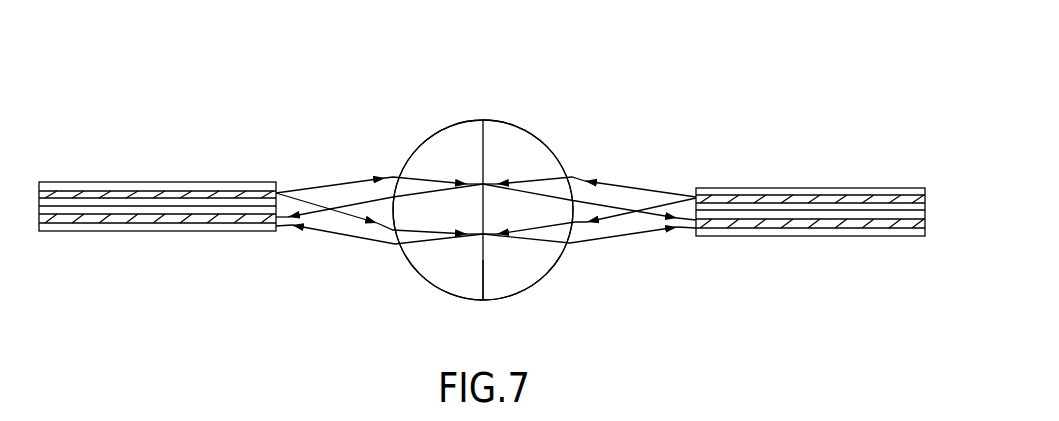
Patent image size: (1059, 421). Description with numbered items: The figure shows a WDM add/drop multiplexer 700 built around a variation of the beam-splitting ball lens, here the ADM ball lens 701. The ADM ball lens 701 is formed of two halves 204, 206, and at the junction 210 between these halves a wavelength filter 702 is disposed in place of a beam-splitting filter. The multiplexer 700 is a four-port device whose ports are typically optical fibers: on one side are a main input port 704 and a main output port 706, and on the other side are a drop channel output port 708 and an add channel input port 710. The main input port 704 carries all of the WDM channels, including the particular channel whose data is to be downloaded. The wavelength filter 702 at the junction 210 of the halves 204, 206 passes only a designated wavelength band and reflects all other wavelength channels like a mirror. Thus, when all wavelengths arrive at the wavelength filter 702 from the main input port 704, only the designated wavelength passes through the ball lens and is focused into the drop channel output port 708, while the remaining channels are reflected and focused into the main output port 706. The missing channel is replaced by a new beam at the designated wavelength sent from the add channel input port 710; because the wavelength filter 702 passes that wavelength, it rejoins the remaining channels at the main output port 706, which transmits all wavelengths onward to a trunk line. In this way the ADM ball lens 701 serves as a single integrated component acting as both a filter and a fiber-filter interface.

The WDM add/drop multiplexer 700 is at (620, 60).
The ADM ball lens 701 is at (515, 120).
The wavelength filter 702 is at (480, 145).
The ball lens half 204 is at (437, 138).
The ball lens half 206 is at (540, 152).
The junction 210 is at (483, 302).
The main input port 704 is at (247, 183).
The main output port 706 is at (255, 226).
The drop channel output port 708 is at (732, 236).
The add channel input port 710 is at (727, 186).